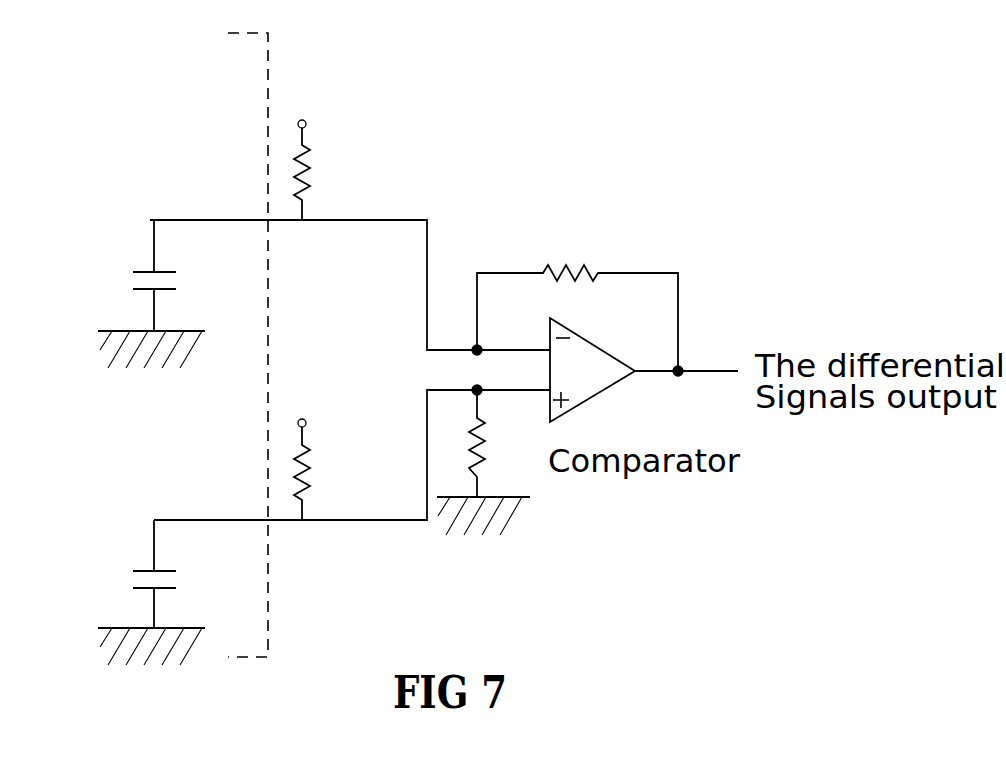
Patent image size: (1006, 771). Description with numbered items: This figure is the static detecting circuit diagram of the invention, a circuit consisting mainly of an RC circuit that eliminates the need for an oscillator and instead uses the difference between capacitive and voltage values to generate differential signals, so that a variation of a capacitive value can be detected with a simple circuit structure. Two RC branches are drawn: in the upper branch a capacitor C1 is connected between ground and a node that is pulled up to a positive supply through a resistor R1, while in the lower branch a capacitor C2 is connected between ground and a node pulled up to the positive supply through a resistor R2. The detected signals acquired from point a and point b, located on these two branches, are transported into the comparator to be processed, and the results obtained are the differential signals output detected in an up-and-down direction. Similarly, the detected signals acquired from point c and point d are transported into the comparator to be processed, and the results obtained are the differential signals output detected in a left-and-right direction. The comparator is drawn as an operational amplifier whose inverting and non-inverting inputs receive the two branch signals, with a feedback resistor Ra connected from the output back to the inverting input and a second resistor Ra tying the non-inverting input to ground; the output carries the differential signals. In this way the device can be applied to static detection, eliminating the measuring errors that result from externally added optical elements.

The point a is at (175, 217).
The point b is at (187, 517).
The point c is at (220, 217).
The point d is at (228, 517).
The first capacitor C1 is at (150, 314).
The second capacitor C2 is at (150, 611).
The first pull-up resistor R1 is at (325, 150).
The second pull-up resistor R2 is at (325, 450).
The comparator resistor Ra is at (557, 380).